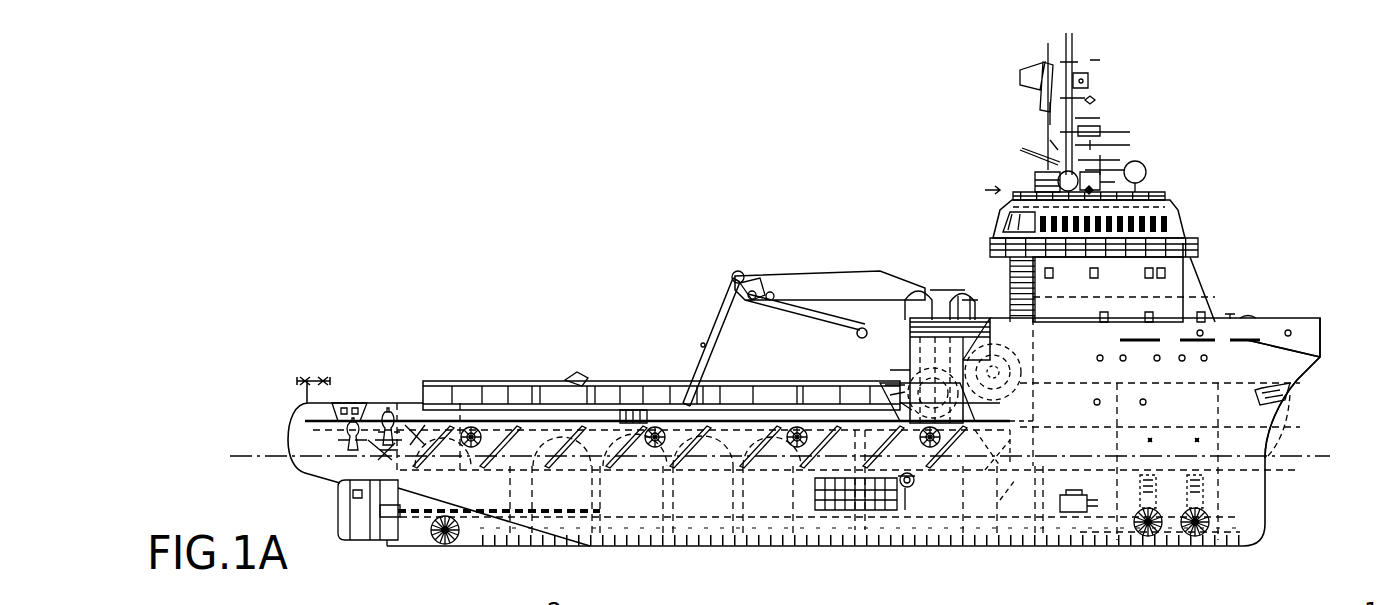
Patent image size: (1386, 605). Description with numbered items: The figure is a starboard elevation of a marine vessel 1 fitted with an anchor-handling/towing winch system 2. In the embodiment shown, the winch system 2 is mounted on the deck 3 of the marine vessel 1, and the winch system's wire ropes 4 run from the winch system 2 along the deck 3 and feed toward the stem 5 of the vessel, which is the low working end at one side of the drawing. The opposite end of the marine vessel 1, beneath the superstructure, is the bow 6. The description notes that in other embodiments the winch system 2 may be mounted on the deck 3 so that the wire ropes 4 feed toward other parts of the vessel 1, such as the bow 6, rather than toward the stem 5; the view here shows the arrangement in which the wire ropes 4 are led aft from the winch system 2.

The marine vessel 1 is at (858, 178).
The anchor-handling/towing winch system 2 is at (978, 435).
The deck 3 is at (555, 424).
The wire ropes 4 is at (877, 355).
The stem 5 is at (293, 392).
The bow 6 is at (1307, 315).